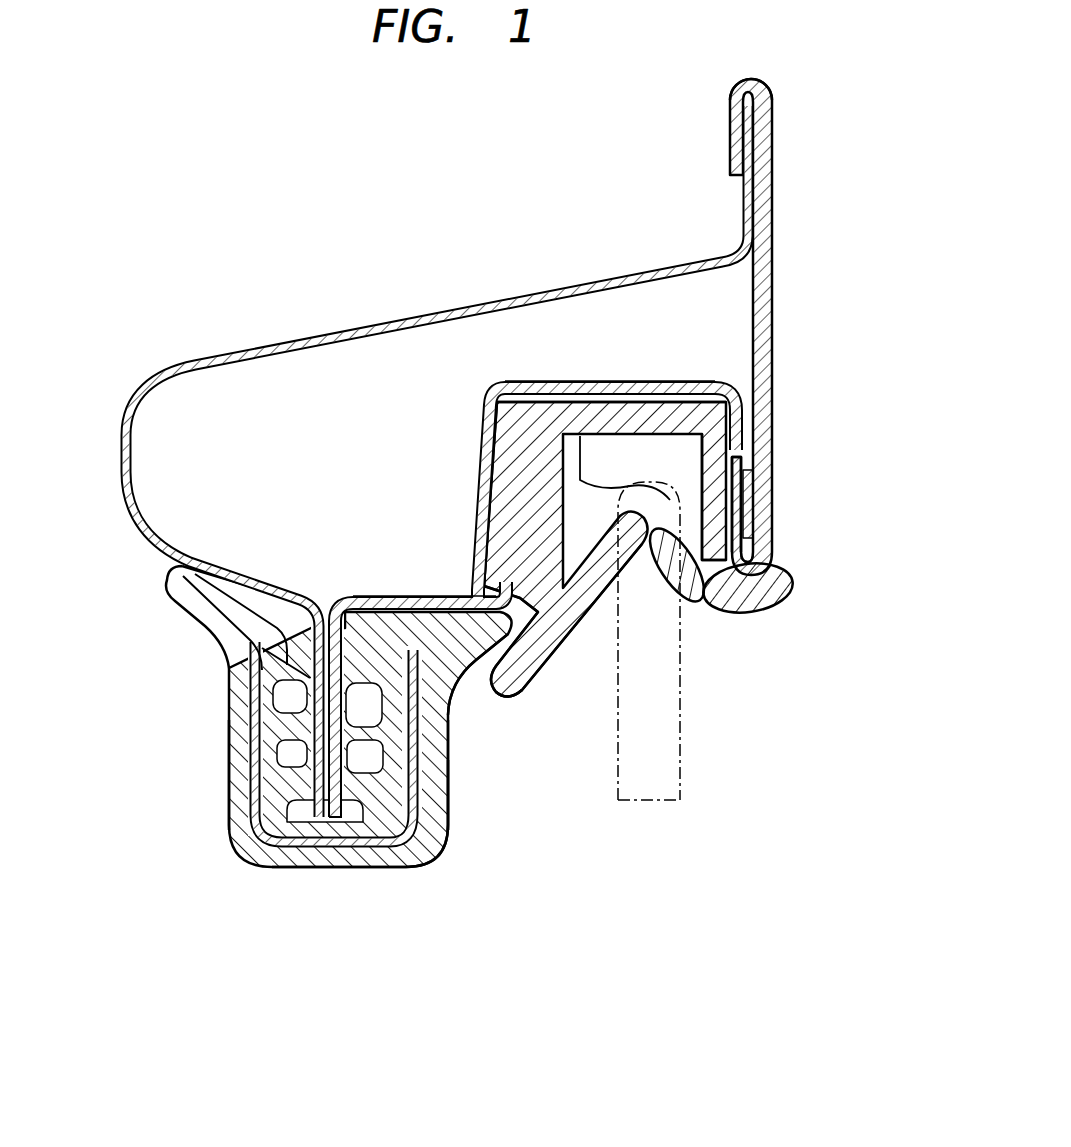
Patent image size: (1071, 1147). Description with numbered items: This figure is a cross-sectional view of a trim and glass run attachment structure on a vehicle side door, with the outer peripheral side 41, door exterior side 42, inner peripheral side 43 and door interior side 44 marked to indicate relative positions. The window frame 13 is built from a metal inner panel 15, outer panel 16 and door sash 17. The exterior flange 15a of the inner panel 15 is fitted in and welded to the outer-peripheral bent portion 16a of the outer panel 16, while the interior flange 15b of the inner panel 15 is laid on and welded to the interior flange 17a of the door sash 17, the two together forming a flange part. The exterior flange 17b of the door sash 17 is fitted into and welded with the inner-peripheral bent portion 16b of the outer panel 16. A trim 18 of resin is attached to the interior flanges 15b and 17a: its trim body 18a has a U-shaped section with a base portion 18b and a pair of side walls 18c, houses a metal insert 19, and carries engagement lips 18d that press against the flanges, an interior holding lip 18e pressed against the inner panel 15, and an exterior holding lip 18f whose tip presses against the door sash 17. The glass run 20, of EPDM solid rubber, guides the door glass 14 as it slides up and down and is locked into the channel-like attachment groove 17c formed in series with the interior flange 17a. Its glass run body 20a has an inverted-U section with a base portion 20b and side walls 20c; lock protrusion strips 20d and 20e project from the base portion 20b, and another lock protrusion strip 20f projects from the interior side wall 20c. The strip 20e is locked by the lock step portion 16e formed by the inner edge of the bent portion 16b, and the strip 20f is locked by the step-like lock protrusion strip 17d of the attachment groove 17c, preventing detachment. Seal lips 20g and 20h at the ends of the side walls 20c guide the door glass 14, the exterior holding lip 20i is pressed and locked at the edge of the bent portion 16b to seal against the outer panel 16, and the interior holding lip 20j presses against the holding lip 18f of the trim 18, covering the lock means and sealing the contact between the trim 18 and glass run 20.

The window frame 13 is at (491, 481).
The door glass 14 is at (681, 752).
The inner panel 15 is at (437, 502).
The exterior flange 15a is at (745, 133).
The interior flange 15b is at (283, 862).
The outer panel 16 is at (758, 309).
The outer-peripheral bent portion 16a is at (738, 118).
The inner-peripheral bent portion 16b is at (740, 505).
The lock step portion 16e is at (748, 462).
The door sash 17 is at (592, 615).
The interior flange 17a is at (355, 817).
The exterior flange 17b is at (748, 532).
The attachment groove 17c is at (640, 398).
The lock protrusion strip 17d is at (478, 592).
The trim 18 is at (300, 757).
The trim body 18a is at (443, 835).
The base portion 18b is at (312, 870).
The side wall 18c is at (230, 722).
The engagement lip 18d is at (310, 762).
The interior holding lip 18e is at (170, 585).
The exterior holding lip 18f is at (488, 695).
The metal insert 19 is at (405, 866).
The glass run 20 is at (630, 527).
The glass run body 20a is at (600, 412).
The base portion 20b is at (678, 420).
The side wall 20c is at (620, 508).
The lock protrusion strip 20d is at (490, 455).
The lock protrusion strip 20e is at (752, 440).
The lock protrusion strip 20f is at (472, 563).
The seal lip 20g is at (680, 612).
The seal lip 20h is at (608, 640).
The exterior holding lip 20i is at (790, 577).
The interior holding lip 20j is at (546, 690).
The outer peripheral side 41 is at (421, 139).
The door exterior side 42 is at (903, 375).
The inner peripheral side 43 is at (437, 989).
The door interior side 44 is at (99, 511).